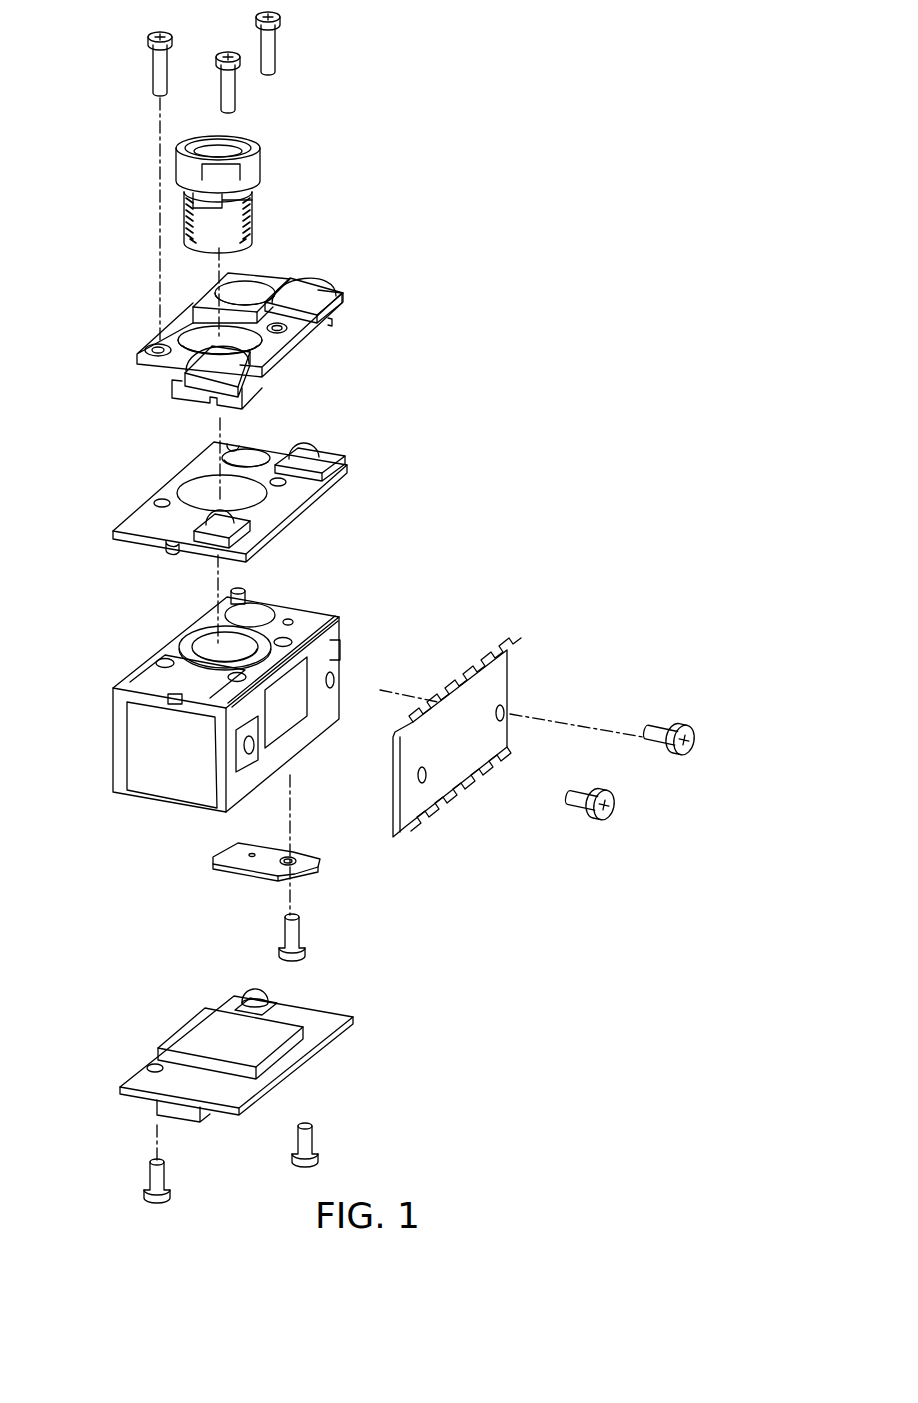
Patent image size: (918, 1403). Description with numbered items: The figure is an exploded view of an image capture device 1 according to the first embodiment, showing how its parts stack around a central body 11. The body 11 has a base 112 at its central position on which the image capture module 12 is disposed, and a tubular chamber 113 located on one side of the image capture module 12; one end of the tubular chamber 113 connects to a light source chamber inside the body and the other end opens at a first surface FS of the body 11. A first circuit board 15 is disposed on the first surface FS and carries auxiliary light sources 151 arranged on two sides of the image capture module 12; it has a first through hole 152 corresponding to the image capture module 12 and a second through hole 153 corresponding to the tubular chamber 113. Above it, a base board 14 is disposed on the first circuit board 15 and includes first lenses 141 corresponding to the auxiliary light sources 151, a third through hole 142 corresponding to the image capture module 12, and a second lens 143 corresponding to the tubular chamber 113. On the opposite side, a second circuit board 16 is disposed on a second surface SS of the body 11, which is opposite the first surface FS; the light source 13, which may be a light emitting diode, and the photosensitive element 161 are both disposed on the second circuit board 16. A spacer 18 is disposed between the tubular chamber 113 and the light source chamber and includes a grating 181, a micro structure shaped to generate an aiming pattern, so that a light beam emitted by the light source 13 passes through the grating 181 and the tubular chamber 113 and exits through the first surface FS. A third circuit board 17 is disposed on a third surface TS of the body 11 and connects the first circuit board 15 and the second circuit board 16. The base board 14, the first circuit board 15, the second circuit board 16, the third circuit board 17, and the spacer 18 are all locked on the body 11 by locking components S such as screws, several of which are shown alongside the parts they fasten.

The image capture device 1 is at (549, 109).
The body 11 is at (113, 700).
The base 112 is at (205, 645).
The tubular chamber 113 is at (258, 610).
The first surface FS is at (318, 610).
The third surface TS is at (345, 688).
The second surface SS is at (142, 810).
The image capture module 12 is at (258, 170).
The light source 13 is at (260, 990).
The base board 14 is at (300, 330).
The first lens 141 is at (312, 290).
The third through hole 142 is at (240, 340).
The second lens 143 is at (245, 292).
The first circuit board 15 is at (125, 530).
The auxiliary light source 151 is at (305, 452).
The first through hole 152 is at (205, 495).
The second through hole 153 is at (245, 460).
The second circuit board 16 is at (285, 1058).
The photosensitive element 161 is at (205, 1028).
The third circuit board 17 is at (490, 688).
The spacer 18 is at (300, 858).
The grating 181 is at (252, 852).
The locking component S is at (150, 74).